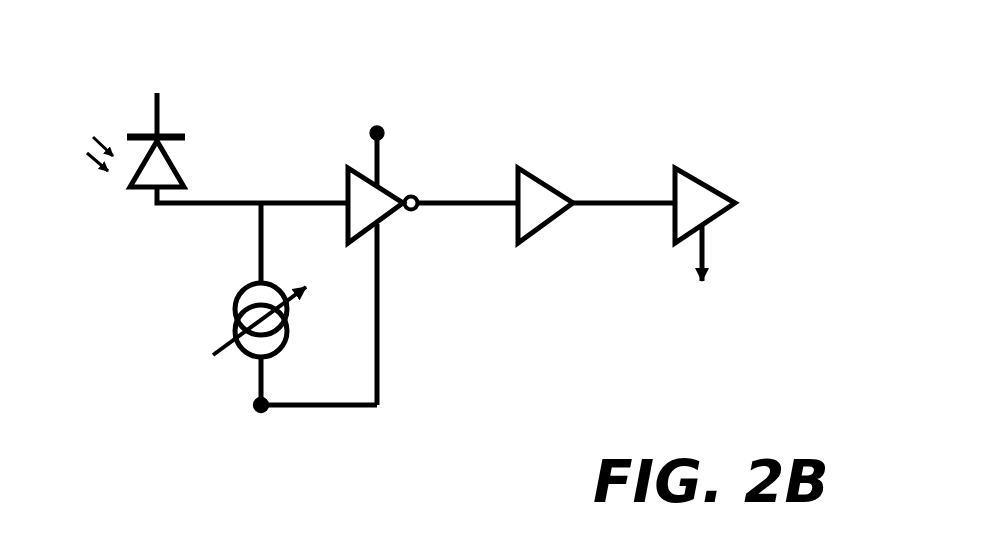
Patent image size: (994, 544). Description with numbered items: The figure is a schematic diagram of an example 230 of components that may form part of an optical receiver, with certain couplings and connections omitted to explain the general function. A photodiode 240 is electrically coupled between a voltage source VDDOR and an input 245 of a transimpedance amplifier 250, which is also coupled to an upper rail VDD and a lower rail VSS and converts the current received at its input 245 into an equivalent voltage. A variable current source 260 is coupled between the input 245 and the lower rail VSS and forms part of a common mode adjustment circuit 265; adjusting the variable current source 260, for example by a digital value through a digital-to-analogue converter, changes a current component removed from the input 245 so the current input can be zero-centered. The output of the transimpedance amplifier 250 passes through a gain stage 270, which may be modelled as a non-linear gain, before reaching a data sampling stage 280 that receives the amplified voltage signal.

The example of optical receiver components 230 is at (663, 83).
The photodiode 240 is at (170, 165).
The input of transimpedance amplifier 245 is at (285, 198).
The transimpedance amplifier 250 is at (385, 190).
The variable current source 260 is at (273, 283).
The common mode adjustment circuit 265 is at (146, 331).
The gain stage 270 is at (542, 180).
The data sampling stage 280 is at (708, 182).